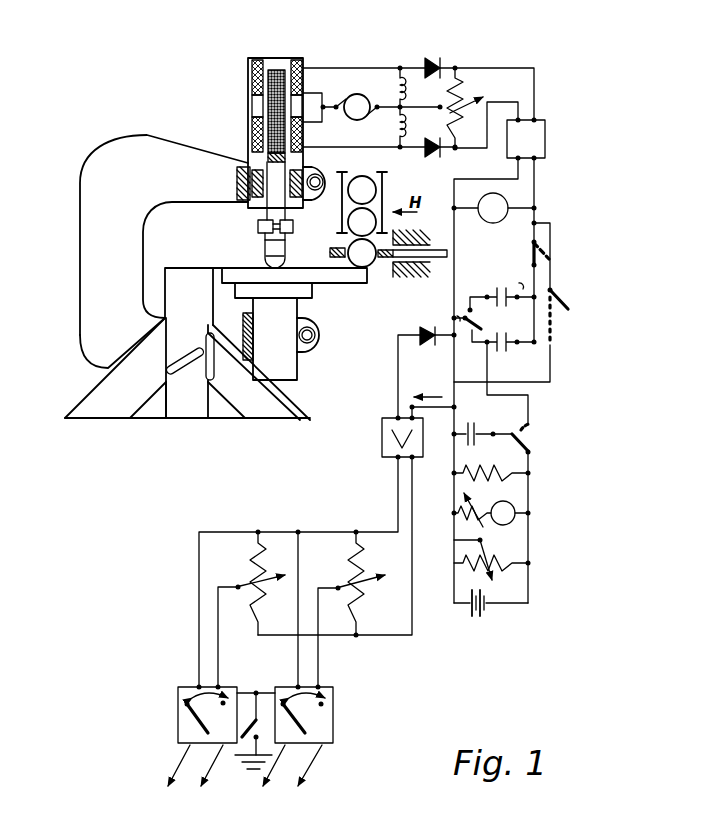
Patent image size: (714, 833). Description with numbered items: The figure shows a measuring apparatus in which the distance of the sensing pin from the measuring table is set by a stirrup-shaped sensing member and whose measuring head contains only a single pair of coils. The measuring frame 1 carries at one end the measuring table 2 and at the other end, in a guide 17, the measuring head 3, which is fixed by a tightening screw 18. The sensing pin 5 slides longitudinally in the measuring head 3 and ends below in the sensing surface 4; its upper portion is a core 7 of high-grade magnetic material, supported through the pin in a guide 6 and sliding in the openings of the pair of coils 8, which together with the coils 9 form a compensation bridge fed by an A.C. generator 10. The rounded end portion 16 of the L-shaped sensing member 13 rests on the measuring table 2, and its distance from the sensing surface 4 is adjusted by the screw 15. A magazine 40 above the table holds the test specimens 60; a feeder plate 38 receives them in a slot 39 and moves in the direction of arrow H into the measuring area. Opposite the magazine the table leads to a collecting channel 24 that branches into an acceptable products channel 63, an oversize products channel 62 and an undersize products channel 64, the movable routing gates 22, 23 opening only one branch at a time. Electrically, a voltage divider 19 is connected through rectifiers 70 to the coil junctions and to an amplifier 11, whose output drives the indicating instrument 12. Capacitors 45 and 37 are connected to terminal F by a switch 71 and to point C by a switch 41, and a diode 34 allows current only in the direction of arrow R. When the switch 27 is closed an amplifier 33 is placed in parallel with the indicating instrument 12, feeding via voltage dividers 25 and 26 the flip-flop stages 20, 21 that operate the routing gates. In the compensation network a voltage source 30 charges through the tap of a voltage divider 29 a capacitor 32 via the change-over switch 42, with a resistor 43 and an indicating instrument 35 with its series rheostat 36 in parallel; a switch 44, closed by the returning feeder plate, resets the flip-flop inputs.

The measuring frame 1 is at (92, 282).
The measuring table 2 is at (322, 284).
The measuring head 3 is at (248, 70).
The sensing surface 4 is at (265, 246).
The sensing pin 5 is at (262, 211).
The guide 6 is at (248, 163).
The core 7 is at (281, 70).
The pair of coils 8 is at (251, 110).
The coils 9 is at (396, 140).
The A.C. generator 10 is at (353, 94).
The amplifier 11 is at (545, 130).
The indicating instrument 12 is at (504, 203).
The L-shaped sensing member 13 is at (287, 250).
The screw 15 is at (292, 227).
The rounded end portion 16 is at (284, 266).
The guide 17 is at (240, 185).
The tightening screw 18 is at (318, 178).
The voltage divider 19 is at (462, 73).
The flip-flop stage 20 is at (190, 723).
The flip-flop stage 21 is at (325, 727).
The movable routing gate 22 is at (186, 362).
The movable routing gate 23 is at (215, 365).
The collecting channel 24 is at (190, 272).
The voltage divider 25 is at (257, 573).
The voltage divider 26 is at (353, 573).
The switch 27 is at (567, 297).
The voltage divider 29 is at (510, 573).
The voltage source 30 is at (483, 612).
The capacitor 32 is at (478, 424).
The amplifier 33 is at (382, 442).
The diode 34 is at (427, 360).
The indicating instrument 35 is at (516, 520).
The series rheostat 36 is at (467, 515).
The capacitor 37 is at (505, 336).
The feeder plate 38 is at (438, 268).
The slot 39 is at (339, 266).
The magazine 40 is at (385, 190).
The switch 41 is at (467, 323).
The change-over switch 42 is at (530, 445).
The resistor 43 is at (508, 480).
The switch 44 is at (248, 757).
The capacitor 45 is at (498, 289).
The test specimen 60 is at (370, 266).
The oversize products channel 62 is at (114, 420).
The acceptable products channel 63 is at (182, 419).
The undersize products channel 64 is at (259, 419).
The rectifier 70 is at (431, 58).
The switch 71 is at (548, 248).